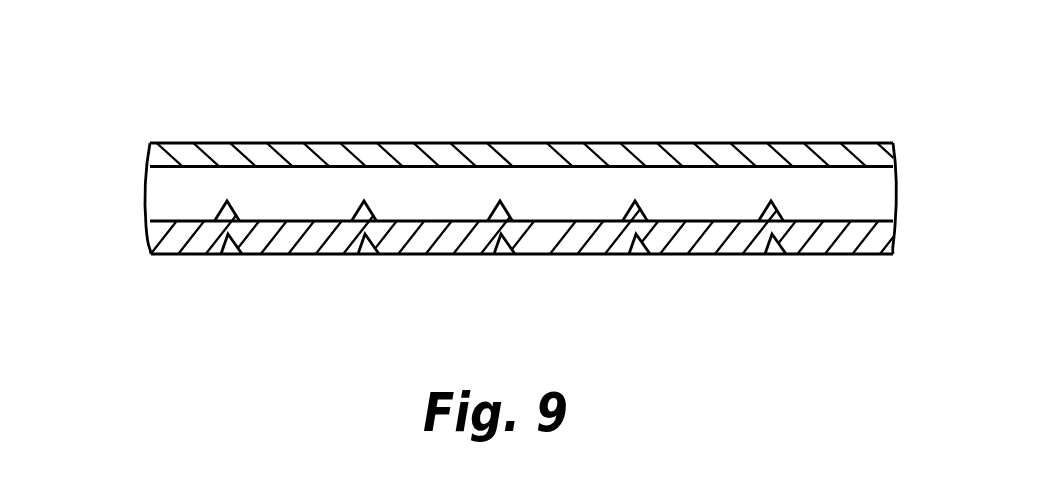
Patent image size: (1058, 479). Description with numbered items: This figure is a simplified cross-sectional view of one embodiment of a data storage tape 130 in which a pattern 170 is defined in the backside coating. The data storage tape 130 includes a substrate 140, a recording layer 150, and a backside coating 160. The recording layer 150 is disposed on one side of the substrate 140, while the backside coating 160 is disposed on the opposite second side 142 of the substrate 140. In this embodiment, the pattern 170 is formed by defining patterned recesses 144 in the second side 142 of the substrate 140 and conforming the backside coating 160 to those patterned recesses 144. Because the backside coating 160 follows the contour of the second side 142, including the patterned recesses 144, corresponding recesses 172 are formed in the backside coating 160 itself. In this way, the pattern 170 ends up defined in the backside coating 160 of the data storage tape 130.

The data storage tape 130 is at (780, 96).
The substrate 140 is at (172, 195).
The second side 142 is at (274, 222).
The patterned recesses 144 is at (227, 237).
The recording layer 150 is at (350, 150).
The backside coating 160 is at (459, 237).
The pattern 170 is at (306, 324).
The recesses 172 is at (365, 240).